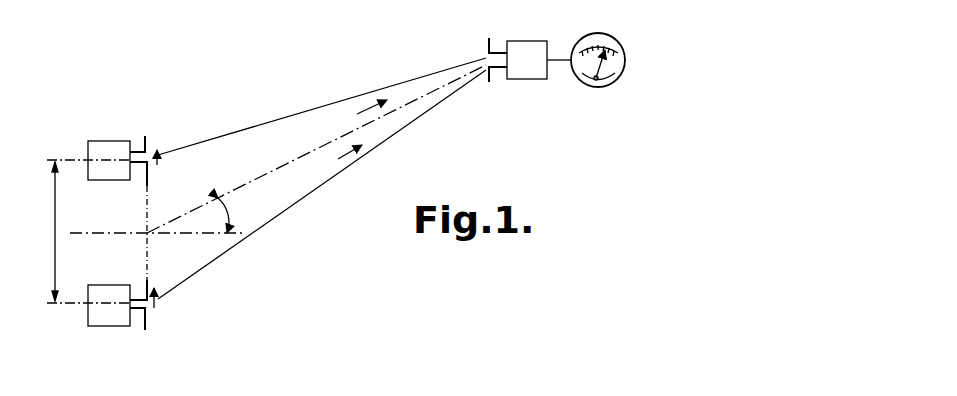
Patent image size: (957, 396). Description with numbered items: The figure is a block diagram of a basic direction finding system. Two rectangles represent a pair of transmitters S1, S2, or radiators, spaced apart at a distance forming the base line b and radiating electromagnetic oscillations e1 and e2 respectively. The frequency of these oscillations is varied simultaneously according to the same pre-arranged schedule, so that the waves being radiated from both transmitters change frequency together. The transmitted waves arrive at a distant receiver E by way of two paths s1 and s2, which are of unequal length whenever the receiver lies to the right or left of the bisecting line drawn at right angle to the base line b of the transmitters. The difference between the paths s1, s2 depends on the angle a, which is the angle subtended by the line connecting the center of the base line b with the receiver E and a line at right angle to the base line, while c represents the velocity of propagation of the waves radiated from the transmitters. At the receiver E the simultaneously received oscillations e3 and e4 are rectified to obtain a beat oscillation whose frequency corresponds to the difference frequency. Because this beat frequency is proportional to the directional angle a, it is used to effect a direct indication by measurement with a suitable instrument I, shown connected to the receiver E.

The transmitter S1 is at (88, 146).
The transmitter S2 is at (88, 293).
The electro-magnetic oscillations e1 is at (153, 161).
The electro-magnetic oscillations e2 is at (153, 305).
The received oscillation e3 is at (482, 60).
The received oscillation e4 is at (487, 74).
The receiver E is at (524, 42).
The instrument I is at (587, 83).
The angle a is at (316, 149).
The base line b is at (144, 231).
The velocity of propagation c is at (353, 136).
The path s1 is at (322, 106).
The path s2 is at (322, 184).